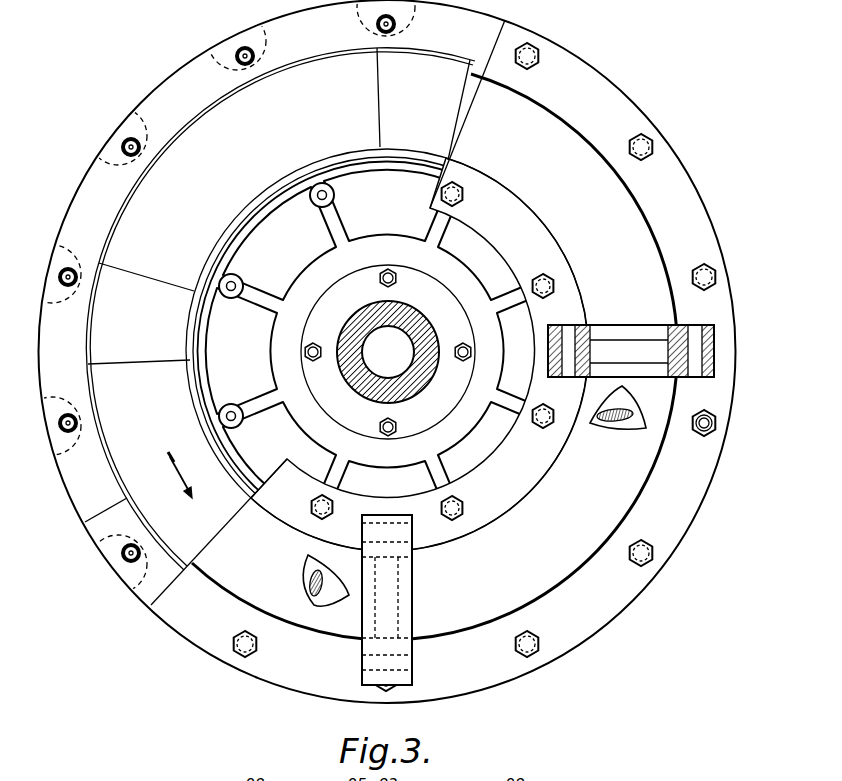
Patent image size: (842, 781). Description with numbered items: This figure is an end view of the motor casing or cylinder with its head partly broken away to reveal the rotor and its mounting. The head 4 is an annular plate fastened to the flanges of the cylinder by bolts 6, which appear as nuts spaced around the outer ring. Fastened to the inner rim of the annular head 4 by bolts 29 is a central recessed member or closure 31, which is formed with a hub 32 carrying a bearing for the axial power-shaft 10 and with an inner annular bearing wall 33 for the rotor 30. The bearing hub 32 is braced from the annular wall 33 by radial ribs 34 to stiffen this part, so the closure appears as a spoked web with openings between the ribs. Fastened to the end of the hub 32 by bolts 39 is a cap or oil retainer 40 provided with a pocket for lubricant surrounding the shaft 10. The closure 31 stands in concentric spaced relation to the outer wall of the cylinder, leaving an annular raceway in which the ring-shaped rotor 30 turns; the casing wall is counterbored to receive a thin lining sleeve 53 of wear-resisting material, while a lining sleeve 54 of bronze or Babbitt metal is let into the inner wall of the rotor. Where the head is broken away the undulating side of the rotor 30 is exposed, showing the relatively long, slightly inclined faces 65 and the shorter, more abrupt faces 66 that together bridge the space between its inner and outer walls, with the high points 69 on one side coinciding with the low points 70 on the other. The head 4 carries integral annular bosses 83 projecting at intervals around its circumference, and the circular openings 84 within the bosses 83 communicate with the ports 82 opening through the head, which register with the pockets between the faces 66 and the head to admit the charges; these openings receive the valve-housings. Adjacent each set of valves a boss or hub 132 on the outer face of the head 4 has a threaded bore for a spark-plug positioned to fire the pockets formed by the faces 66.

The head 4 is at (379, 351).
The bolts 6 is at (641, 133).
The power-shaft 10 is at (372, 315).
The bolts 29 is at (465, 197).
The rotor 30 is at (100, 523).
The central recessed member or closure 31 is at (269, 439).
The hub 32 is at (319, 419).
The inner annular bearing wall 33 is at (208, 355).
The radial ribs 34 is at (333, 229).
The bolts 39 is at (314, 345).
The cap or oil retainer 40 is at (388, 352).
The lining sleeve 53 is at (127, 206).
The lining sleeve 54 is at (240, 240).
The inclined faces 65 is at (361, 342).
The faces 66 is at (280, 211).
The high points 69 is at (376, 118).
The low points 70 is at (455, 128).
The ports 82 is at (392, 605).
The annular bosses 83 is at (714, 352).
The circular openings 84 is at (672, 330).
The bosses or hubs 132 is at (640, 428).